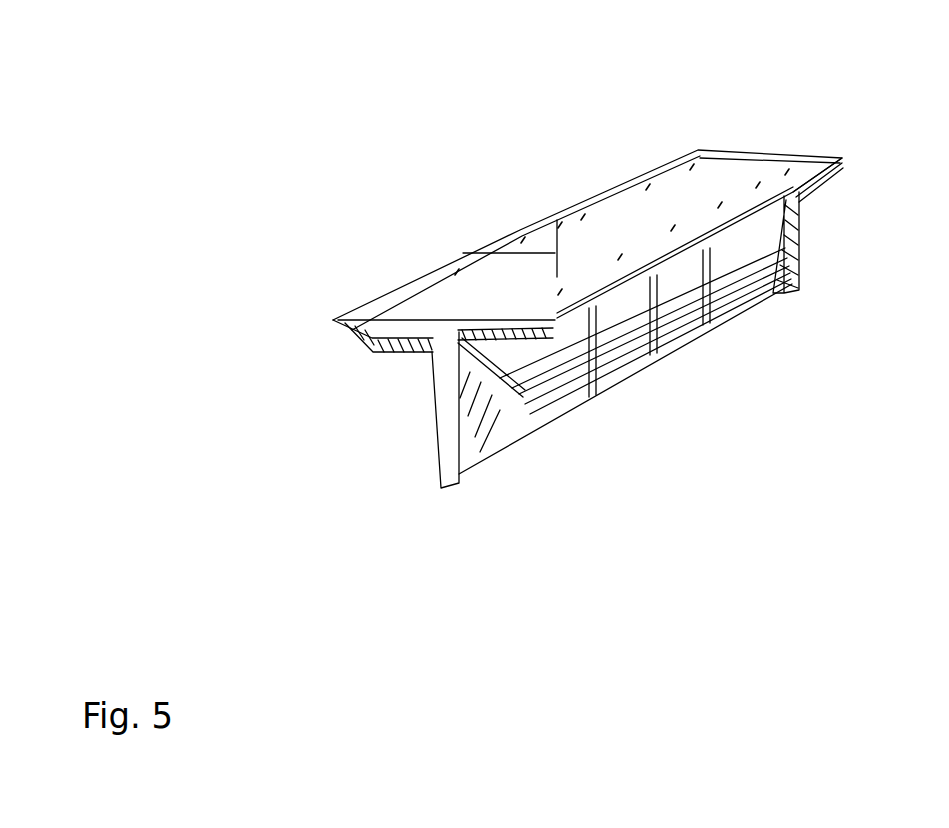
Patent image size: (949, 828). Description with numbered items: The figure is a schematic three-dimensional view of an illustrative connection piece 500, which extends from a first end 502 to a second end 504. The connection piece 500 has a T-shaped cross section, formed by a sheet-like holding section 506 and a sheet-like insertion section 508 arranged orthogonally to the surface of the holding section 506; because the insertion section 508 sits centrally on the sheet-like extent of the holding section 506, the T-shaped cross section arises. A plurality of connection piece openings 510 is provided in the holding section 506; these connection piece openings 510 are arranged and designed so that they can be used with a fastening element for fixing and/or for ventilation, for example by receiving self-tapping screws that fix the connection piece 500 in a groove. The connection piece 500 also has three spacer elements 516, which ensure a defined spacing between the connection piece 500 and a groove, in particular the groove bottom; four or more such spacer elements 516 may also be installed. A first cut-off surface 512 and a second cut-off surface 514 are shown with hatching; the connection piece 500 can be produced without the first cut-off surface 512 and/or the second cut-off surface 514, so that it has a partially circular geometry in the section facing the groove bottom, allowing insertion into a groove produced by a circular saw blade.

The connection piece 500 is at (316, 117).
The first end 502 is at (364, 477).
The second end 504 is at (781, 140).
The holding section 506 is at (617, 217).
The insertion section 508 is at (690, 305).
The connection piece openings 510 is at (402, 300).
The first cut-off surface 512 is at (500, 423).
The second cut-off surface 514 is at (797, 270).
The spacer elements 516 is at (598, 358).